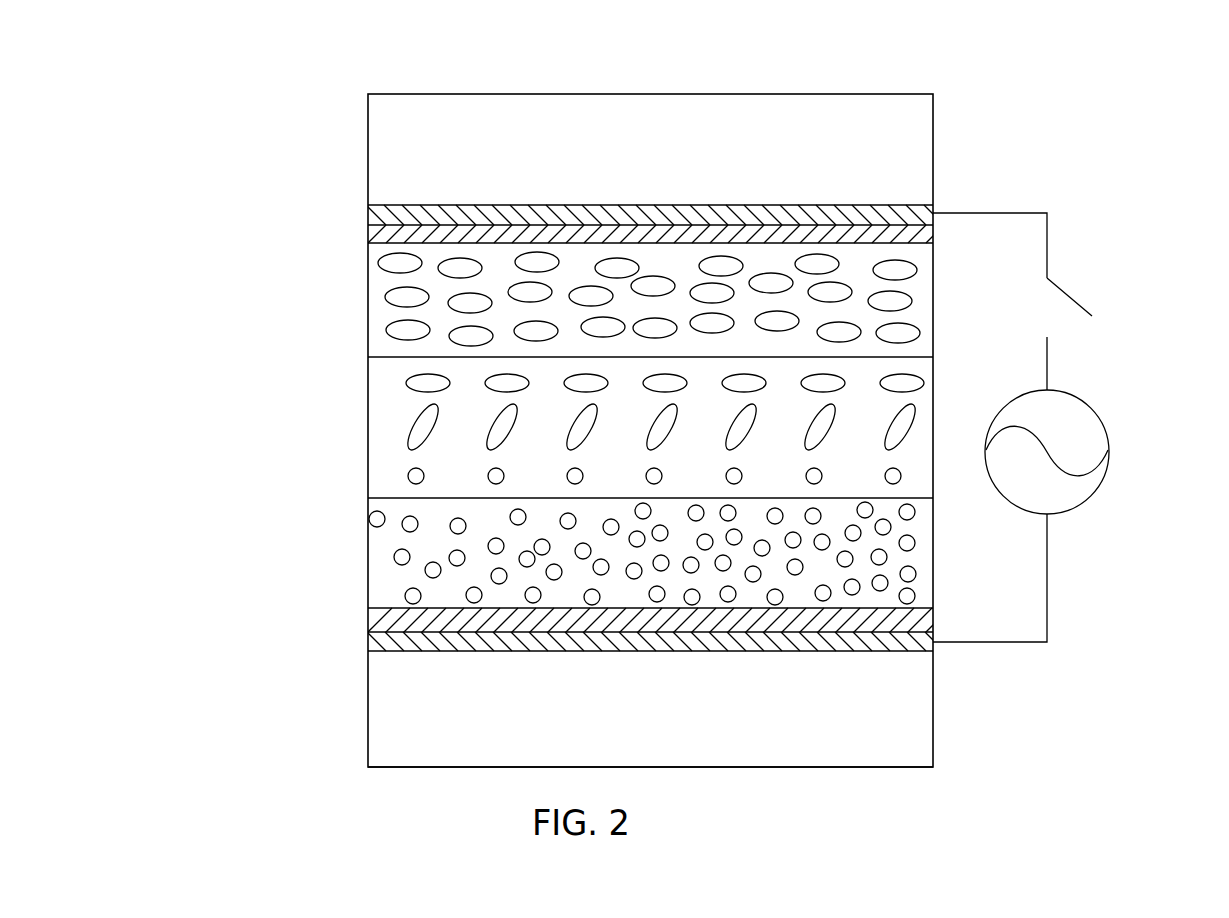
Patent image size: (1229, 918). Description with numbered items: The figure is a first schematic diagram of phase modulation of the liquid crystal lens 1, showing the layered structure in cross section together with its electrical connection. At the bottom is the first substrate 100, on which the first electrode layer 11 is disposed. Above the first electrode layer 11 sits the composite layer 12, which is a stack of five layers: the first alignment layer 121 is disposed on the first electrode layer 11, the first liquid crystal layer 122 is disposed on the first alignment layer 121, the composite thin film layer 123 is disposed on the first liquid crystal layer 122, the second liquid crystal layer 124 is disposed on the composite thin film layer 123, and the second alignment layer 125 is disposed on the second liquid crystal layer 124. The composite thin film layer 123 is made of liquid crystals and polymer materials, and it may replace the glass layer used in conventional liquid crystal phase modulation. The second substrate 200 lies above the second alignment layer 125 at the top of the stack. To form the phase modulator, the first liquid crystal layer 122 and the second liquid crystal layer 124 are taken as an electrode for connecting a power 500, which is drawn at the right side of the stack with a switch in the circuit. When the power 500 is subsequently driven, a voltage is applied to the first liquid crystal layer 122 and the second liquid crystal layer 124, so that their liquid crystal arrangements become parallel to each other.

The liquid crystal lens 1 is at (240, 83).
The second substrate 200 is at (368, 146).
The second alignment layer 125 is at (368, 235).
The second liquid crystal layer 124 is at (368, 298).
The composite thin film layer 123 is at (368, 420).
The first liquid crystal layer 122 is at (368, 553).
The first alignment layer 121 is at (368, 620).
The composite layer 12 is at (235, 225).
The first electrode layer 11 is at (368, 641).
The first substrate 100 is at (368, 732).
The power 500 is at (1105, 425).